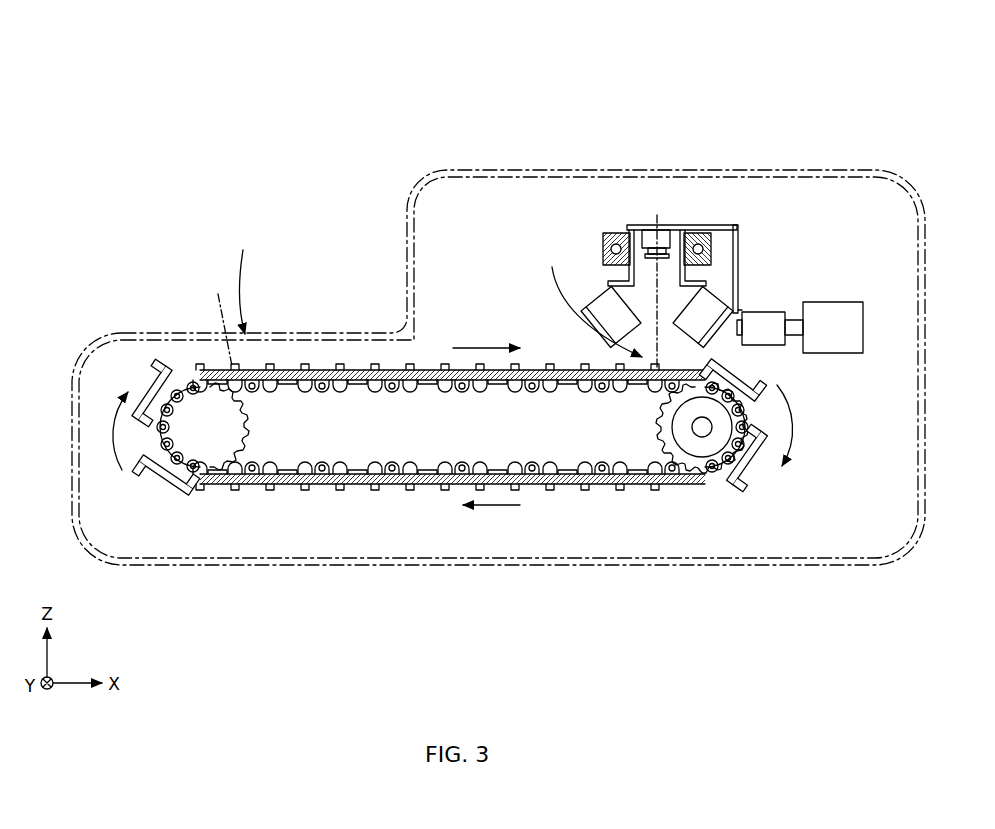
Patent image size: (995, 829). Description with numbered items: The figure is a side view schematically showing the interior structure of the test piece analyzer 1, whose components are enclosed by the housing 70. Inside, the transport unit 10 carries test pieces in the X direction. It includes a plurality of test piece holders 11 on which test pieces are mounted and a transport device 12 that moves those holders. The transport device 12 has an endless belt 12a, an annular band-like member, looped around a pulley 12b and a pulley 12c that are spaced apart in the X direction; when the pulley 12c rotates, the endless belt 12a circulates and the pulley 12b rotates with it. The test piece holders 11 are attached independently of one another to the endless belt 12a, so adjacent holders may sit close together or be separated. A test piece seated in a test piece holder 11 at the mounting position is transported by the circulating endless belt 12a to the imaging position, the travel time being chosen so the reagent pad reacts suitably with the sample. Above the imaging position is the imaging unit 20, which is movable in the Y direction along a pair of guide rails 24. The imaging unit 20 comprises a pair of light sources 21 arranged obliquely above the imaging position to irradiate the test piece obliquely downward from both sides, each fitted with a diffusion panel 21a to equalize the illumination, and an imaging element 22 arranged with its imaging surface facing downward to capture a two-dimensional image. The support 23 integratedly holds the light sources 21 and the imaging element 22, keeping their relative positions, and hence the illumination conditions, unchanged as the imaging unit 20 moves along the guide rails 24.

The test piece analyzer 1 is at (814, 132).
The transport unit 10 is at (147, 370).
The test piece holder 11 is at (337, 368).
The transport device 12 is at (310, 416).
The endless belt 12a is at (283, 470).
The pulley 12b is at (207, 457).
The pulley 12c is at (658, 423).
The imaging unit 20 is at (705, 216).
The light source 21 is at (603, 311).
The diffusion panel 21a is at (641, 306).
The imaging element 22 is at (664, 226).
The support 23 is at (698, 281).
The guide rail 24 is at (612, 234).
The housing 70 is at (925, 326).